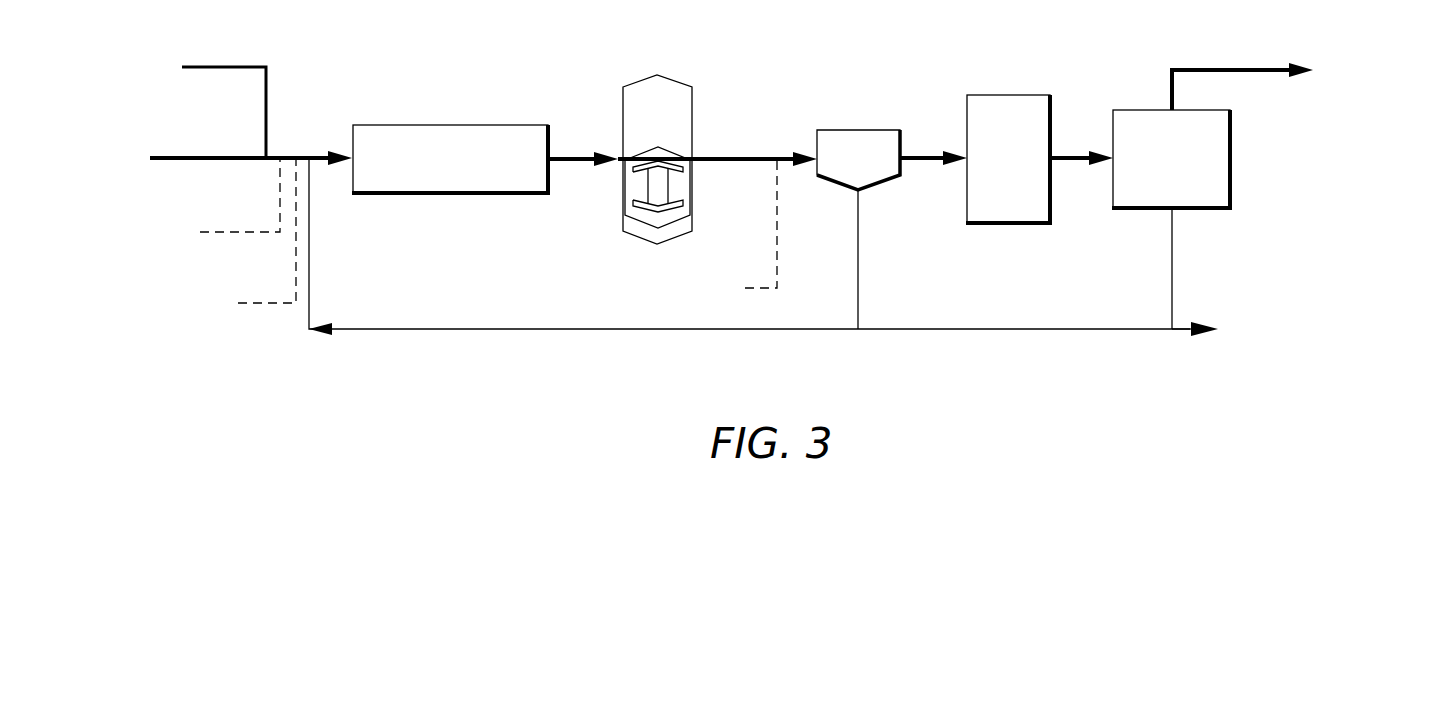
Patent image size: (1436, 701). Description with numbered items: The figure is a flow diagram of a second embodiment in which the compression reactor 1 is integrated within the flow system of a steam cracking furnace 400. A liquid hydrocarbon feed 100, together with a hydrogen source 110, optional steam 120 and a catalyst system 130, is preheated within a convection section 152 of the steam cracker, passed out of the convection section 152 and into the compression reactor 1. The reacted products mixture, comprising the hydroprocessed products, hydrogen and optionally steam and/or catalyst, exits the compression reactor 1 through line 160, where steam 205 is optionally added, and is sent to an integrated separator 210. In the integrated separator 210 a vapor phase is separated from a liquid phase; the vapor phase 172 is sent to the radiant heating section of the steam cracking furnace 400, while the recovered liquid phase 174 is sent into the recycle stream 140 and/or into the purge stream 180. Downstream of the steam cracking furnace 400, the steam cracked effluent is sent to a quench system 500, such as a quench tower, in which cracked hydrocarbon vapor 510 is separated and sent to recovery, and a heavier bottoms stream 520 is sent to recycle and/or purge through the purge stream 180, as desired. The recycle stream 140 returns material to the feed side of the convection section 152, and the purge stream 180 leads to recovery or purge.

The liquid hydrocarbon feed 100 is at (232, 161).
The hydrogen source 110 is at (207, 109).
The optional steam 120 is at (220, 201).
The catalyst system 130 is at (247, 237).
The recycle stream 140 is at (502, 327).
The convection section 152 is at (465, 177).
The compression reactor 1 is at (692, 185).
The line 160 is at (765, 157).
The steam 205 is at (736, 231).
The integrated separator 210 is at (876, 166).
The vapor phase 172 is at (922, 150).
The recovered liquid phase 174 is at (858, 273).
The steam cracking furnace 400 is at (1024, 164).
The quench system 500 is at (1190, 169).
The cracked hydrocarbon vapor 510 is at (1185, 67).
The heavier bottoms stream 520 is at (1172, 282).
The purge stream 180 is at (1057, 329).